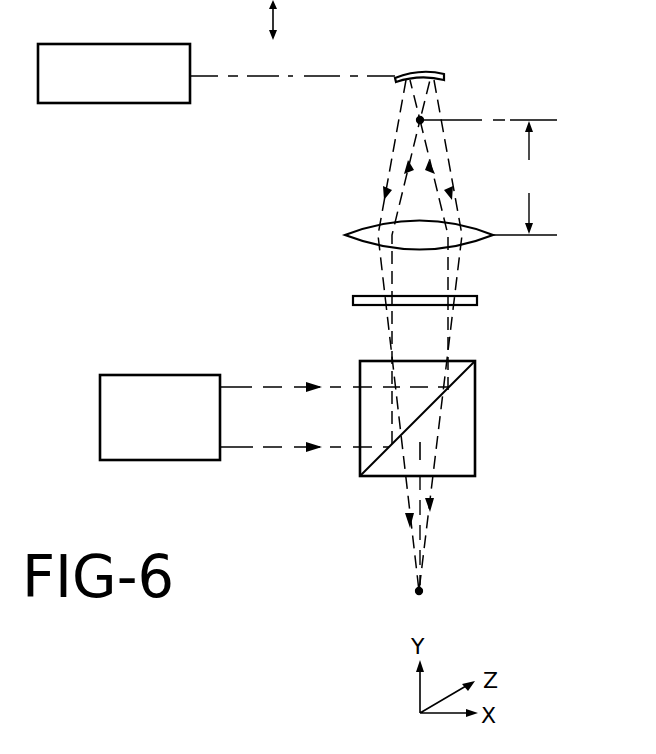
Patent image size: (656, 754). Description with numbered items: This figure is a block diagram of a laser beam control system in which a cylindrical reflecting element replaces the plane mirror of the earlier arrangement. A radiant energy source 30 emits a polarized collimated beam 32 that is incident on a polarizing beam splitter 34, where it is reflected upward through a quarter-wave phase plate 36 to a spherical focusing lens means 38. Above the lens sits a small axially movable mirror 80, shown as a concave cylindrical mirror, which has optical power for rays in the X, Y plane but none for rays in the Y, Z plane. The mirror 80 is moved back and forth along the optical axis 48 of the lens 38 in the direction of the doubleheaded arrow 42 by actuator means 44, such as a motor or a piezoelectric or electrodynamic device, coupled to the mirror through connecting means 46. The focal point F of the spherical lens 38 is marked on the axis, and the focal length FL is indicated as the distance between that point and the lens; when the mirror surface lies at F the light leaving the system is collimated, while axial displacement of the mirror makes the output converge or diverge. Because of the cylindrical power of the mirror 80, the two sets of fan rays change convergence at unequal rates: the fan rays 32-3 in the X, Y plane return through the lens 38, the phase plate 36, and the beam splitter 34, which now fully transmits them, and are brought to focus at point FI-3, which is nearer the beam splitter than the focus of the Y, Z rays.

The radiant energy source 30 is at (109, 375).
The collimated beam 32 is at (265, 386).
The polarizing beam splitter 34 is at (476, 417).
The quarter-wave phase plate 36 is at (477, 300).
The focusing lens means 38 is at (346, 234).
The doubleheaded arrow 42 is at (272, 16).
The actuator means 44 is at (82, 44).
The connecting means 46 is at (232, 77).
The optical axis 48 is at (420, 459).
The axially movable mirror 80 is at (443, 70).
The focal point F is at (417, 120).
The focal length FL is at (529, 177).
The fan rays 32-3 is at (424, 540).
The focus point FI-3 is at (421, 591).